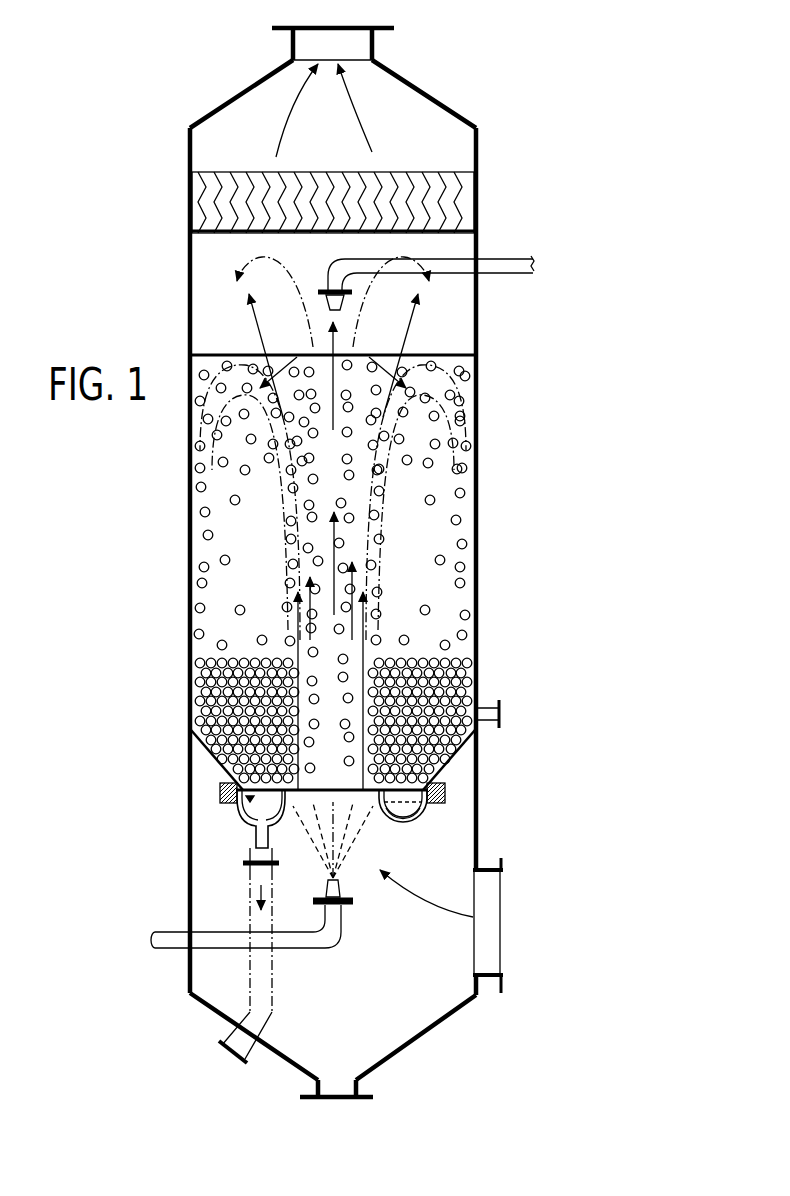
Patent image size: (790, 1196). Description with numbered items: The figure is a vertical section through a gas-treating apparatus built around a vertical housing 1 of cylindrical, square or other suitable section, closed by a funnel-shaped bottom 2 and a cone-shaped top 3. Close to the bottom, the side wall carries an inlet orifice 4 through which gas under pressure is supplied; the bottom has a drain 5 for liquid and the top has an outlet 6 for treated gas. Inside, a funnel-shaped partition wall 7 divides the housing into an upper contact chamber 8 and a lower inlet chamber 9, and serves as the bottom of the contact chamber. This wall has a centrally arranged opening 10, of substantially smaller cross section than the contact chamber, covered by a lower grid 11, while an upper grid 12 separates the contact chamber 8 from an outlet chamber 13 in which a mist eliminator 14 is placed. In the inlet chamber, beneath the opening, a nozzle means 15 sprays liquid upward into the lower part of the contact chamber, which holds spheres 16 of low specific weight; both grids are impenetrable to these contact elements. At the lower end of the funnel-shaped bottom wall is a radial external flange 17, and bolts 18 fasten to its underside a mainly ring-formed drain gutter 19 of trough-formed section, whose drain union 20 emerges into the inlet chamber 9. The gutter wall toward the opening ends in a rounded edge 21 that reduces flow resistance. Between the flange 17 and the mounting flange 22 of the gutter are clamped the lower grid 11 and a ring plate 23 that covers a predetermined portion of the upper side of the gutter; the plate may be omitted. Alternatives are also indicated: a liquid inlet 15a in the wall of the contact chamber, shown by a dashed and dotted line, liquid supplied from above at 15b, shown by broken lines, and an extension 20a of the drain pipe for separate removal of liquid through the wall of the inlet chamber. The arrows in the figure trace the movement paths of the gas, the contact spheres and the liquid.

The vertical housing 1 is at (478, 400).
The funnel-shaped bottom 2 is at (433, 1032).
The cone-shaped top 3 is at (430, 98).
The inlet orifice 4 is at (485, 898).
The drain 5 is at (340, 1090).
The outlet 6 is at (353, 46).
The partition wall 7 is at (442, 765).
The contact chamber 8 is at (412, 540).
The inlet chamber 9 is at (420, 985).
The opening 10 is at (236, 783).
The grid 11 is at (358, 797).
The upper grid 12 is at (437, 353).
The outlet chamber 13 is at (428, 147).
The mist eliminator 14 is at (468, 190).
The nozzle means 15 is at (330, 935).
The inlet for liquid 15a is at (490, 715).
The liquid supply from above 15b is at (508, 265).
The spheres 16 is at (440, 690).
The radial external flange 17 is at (447, 790).
The bolts 18 is at (445, 800).
The drain gutter 19 is at (250, 812).
The drain union 20 is at (258, 852).
The extension of the drain pipe 20a is at (262, 973).
The edge 21 is at (405, 812).
The mounting flange 22 is at (222, 790).
The ring plate 23 is at (422, 812).